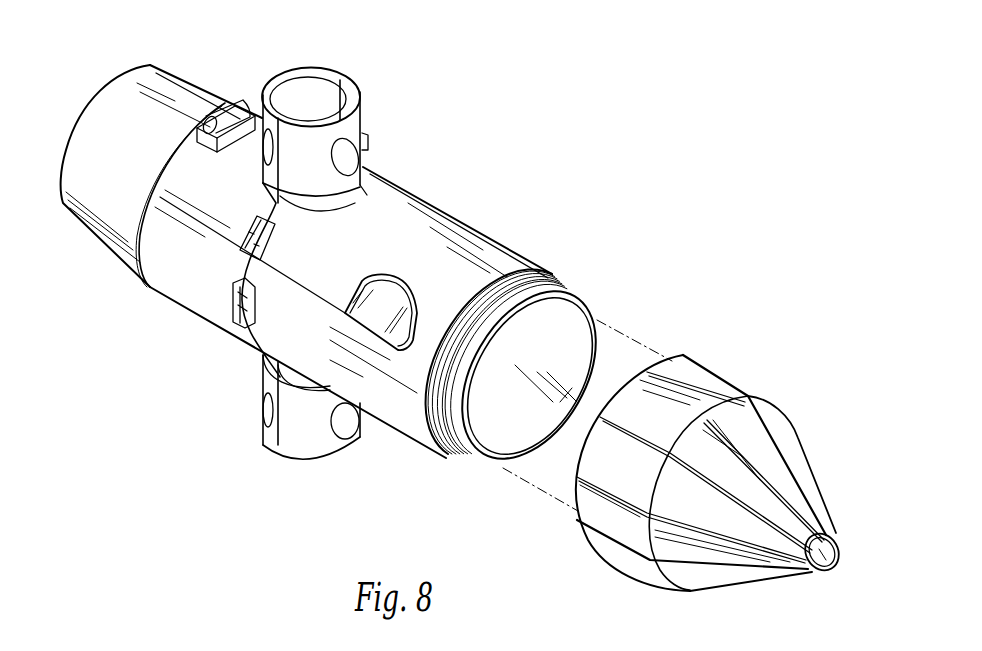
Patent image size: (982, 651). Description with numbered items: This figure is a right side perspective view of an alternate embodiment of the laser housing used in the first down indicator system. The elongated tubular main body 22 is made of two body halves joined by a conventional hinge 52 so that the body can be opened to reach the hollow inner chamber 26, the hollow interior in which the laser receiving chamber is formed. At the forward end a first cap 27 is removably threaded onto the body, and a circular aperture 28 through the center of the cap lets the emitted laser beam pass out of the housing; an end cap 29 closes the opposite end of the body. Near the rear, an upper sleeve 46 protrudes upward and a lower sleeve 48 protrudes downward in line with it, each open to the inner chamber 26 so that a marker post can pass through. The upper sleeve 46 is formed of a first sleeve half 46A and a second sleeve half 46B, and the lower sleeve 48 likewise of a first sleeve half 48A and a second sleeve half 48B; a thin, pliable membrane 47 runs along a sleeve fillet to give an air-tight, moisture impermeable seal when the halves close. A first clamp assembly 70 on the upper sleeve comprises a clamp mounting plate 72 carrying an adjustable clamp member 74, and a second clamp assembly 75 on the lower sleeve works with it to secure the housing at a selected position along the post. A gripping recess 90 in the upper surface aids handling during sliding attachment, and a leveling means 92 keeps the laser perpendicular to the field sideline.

The main body 22 is at (212, 232).
The hollow inner chamber 26 is at (563, 344).
The first cap 27 is at (797, 461).
The circular aperture 28 is at (833, 571).
The end cap 29 is at (110, 102).
The upper sleeve 46 is at (375, 121).
The first sleeve half 46A is at (361, 100).
The second sleeve half 46B is at (270, 78).
The thin, pliable membrane 47 is at (346, 82).
The lower sleeve 48 is at (265, 453).
The first sleeve half 48A is at (302, 457).
The second sleeve half 48B is at (262, 380).
The conventional hinge 52 is at (232, 301).
The first clamp assembly 70 is at (253, 83).
The clamp mounting plate 72 is at (350, 162).
The adjustable clamp member 74 is at (257, 129).
The second clamp assembly 75 is at (350, 463).
The gripping recess 90 is at (396, 353).
The leveling means 92 is at (235, 102).